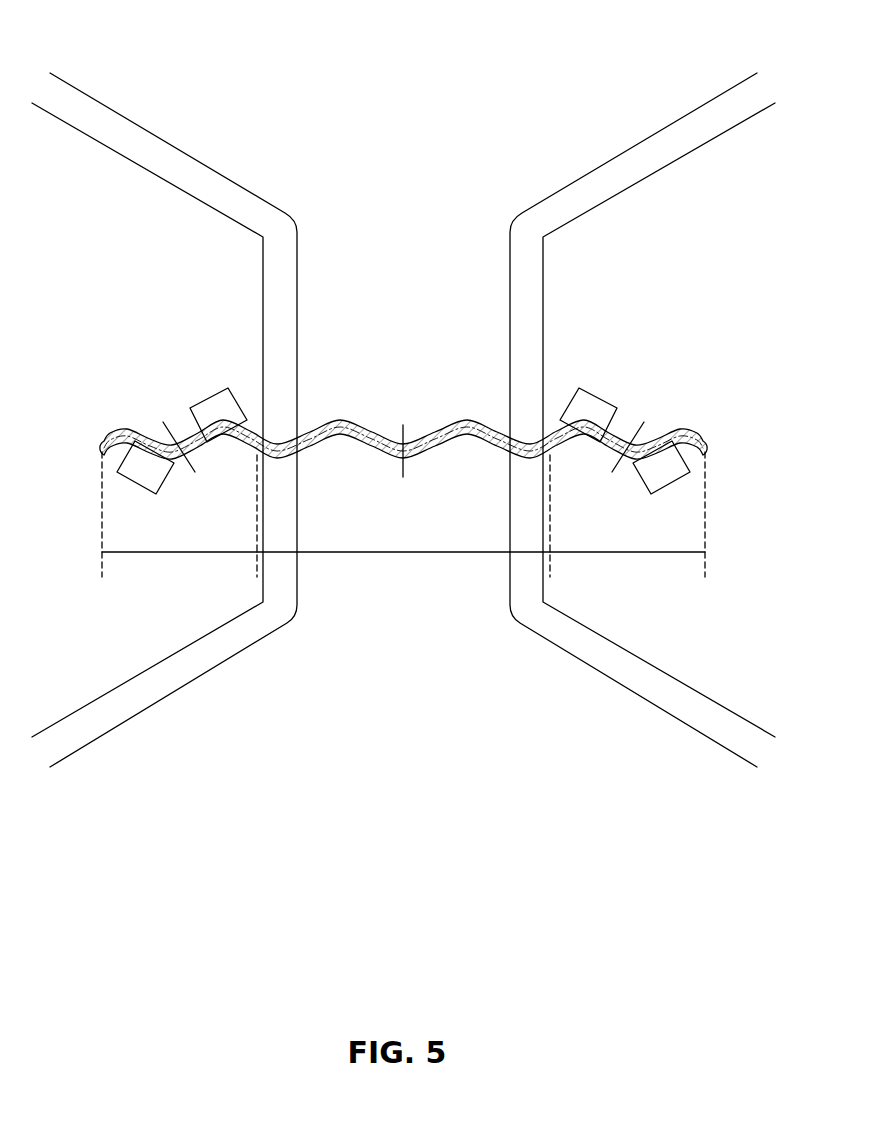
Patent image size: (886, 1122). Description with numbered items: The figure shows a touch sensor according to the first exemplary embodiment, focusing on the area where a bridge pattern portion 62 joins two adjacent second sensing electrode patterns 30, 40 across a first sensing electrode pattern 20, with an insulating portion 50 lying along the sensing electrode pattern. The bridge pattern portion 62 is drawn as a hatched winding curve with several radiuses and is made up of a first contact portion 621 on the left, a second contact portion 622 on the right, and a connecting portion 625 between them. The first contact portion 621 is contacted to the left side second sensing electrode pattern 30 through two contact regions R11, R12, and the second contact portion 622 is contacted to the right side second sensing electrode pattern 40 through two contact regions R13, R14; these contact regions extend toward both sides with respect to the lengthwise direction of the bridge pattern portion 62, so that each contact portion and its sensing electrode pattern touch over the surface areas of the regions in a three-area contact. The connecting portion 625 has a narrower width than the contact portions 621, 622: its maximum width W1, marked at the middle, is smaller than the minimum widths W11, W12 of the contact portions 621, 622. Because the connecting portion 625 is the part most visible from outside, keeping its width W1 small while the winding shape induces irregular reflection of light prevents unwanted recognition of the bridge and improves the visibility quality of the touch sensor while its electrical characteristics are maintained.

The first sensing electrode pattern 20 is at (413, 185).
The second sensing electrode pattern 30 is at (80, 163).
The second sensing electrode pattern 40 is at (690, 180).
The insulating portion 50 is at (143, 145).
The bridge pattern portion 62 is at (104, 417).
The first contact portion 621 is at (179, 517).
The second contact portion 622 is at (627, 517).
The connecting portion 625 is at (403, 567).
The contact region R11 is at (213, 403).
The contact region R12 is at (143, 480).
The contact region R13 is at (592, 405).
The contact region R14 is at (663, 478).
The maximum width of connecting portion W1 is at (393, 440).
The minimum width of first contact portion W11 is at (167, 443).
The minimum width of second contact portion W12 is at (642, 443).